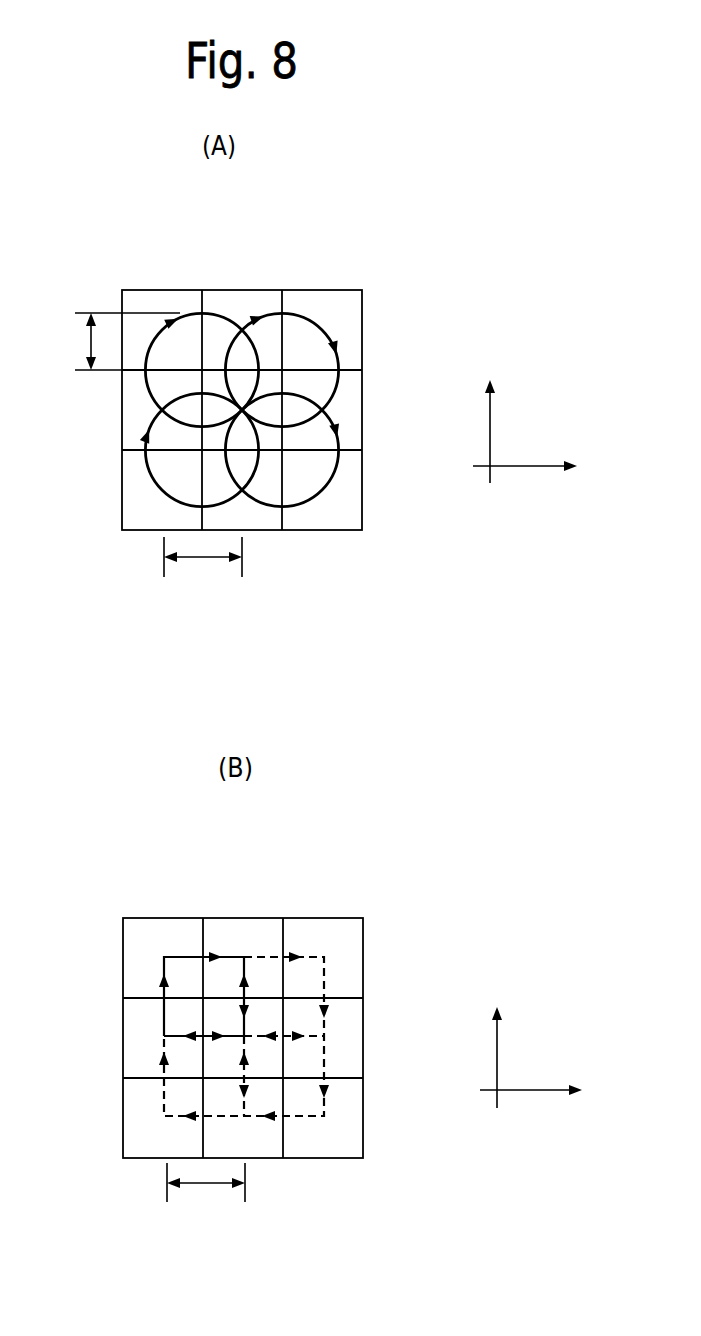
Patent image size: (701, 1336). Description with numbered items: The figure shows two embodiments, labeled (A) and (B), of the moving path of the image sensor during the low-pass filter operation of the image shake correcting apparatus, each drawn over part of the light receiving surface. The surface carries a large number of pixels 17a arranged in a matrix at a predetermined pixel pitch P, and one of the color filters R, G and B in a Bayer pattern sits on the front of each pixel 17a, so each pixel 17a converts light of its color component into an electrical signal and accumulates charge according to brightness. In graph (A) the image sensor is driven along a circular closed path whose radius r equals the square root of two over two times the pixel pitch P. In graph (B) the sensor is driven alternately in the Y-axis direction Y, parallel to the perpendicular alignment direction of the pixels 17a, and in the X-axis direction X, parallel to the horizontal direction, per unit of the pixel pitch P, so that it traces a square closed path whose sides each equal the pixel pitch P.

The pixel 17a is at (161, 290).
The radius r is at (124, 341).
The pixel pitch P is at (204, 874).
The X-axis direction X is at (538, 779).
The Y-axis direction Y is at (493, 730).